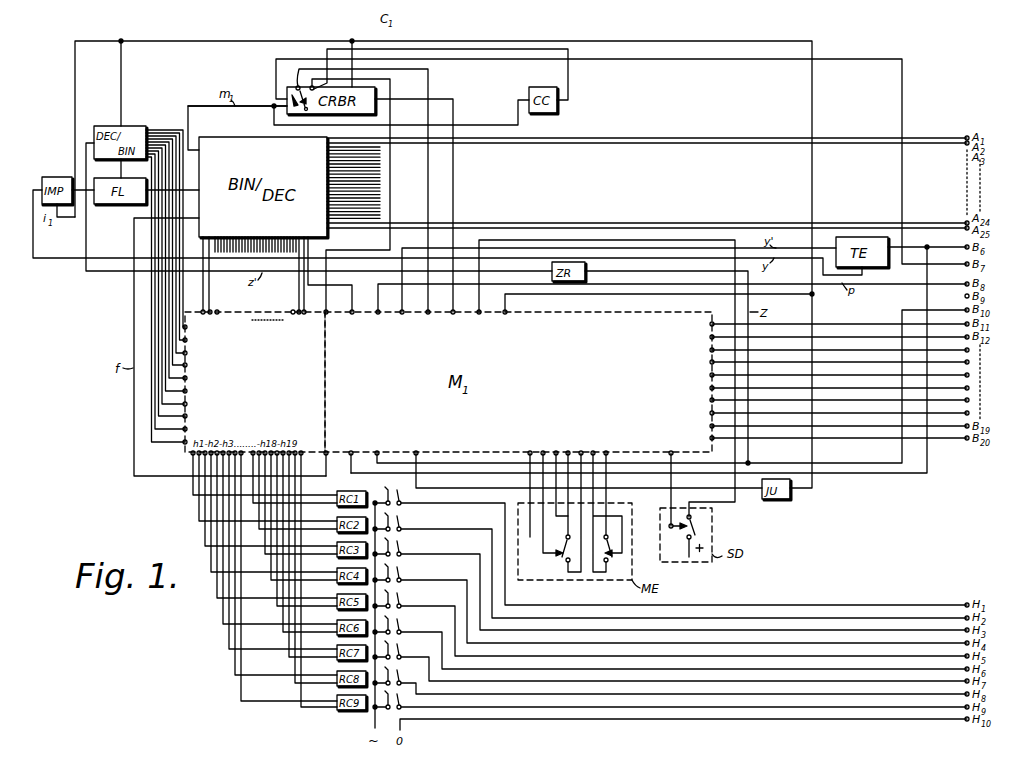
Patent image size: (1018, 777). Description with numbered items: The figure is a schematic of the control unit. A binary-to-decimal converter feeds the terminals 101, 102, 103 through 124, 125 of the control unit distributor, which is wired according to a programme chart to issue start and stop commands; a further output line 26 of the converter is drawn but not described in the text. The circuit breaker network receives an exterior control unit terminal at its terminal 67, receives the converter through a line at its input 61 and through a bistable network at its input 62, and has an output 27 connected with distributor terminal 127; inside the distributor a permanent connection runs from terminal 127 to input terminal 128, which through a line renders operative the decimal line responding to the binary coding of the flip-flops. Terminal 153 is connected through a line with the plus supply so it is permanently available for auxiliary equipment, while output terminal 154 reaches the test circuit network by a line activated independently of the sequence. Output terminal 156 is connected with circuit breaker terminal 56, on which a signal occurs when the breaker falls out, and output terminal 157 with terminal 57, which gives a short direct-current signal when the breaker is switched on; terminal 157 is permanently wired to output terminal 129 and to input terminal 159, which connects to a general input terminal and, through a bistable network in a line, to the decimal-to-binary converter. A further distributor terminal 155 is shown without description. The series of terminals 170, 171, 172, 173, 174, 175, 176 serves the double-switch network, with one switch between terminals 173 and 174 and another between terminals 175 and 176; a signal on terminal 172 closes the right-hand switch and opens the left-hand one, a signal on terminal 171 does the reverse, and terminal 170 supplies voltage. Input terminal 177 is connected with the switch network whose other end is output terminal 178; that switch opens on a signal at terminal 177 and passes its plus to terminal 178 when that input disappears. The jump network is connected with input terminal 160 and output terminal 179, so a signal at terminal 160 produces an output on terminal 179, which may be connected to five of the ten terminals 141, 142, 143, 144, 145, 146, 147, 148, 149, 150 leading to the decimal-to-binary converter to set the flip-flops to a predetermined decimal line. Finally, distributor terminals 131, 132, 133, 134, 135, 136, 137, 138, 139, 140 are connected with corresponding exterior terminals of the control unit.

The output line of BIN/DEC converter 26 is at (311, 244).
The output of circuit breaker 27 is at (297, 84).
The output terminal of circuit breaker 56 is at (284, 71).
The output terminal of circuit breaker 57 is at (381, 98).
The input of circuit breaker 61 is at (274, 108).
The input of circuit breaker 62 is at (326, 80).
The terminal of circuit breaker 67 is at (276, 94).
The distributor terminal 101 is at (202, 281).
The distributor terminal 102 is at (220, 281).
The distributor terminal 103 is at (232, 317).
The distributor terminal 124 is at (296, 281).
The distributor terminal 125 is at (312, 281).
The distributor output terminal 127 is at (351, 202).
The distributor input terminal 128 is at (335, 457).
The distributor output terminal 129 is at (361, 317).
The distributor terminal 131 is at (829, 324).
The distributor terminal 132 is at (829, 337).
The distributor terminal 133 is at (829, 350).
The distributor terminal 134 is at (829, 362).
The distributor terminal 135 is at (829, 375).
The distributor terminal 136 is at (829, 388).
The distributor terminal 137 is at (829, 400).
The distributor terminal 138 is at (829, 413).
The distributor terminal 139 is at (829, 426).
The distributor terminal 140 is at (829, 438).
The coding terminal 141 is at (188, 329).
The coding terminal 142 is at (177, 239).
The coding terminal 143 is at (177, 247).
The coding terminal 144 is at (177, 255).
The coding terminal 145 is at (177, 263).
The coding terminal 146 is at (177, 271).
The coding terminal 147 is at (177, 279).
The coding terminal 148 is at (177, 286).
The coding terminal 149 is at (177, 294).
The coding terminal 150 is at (188, 442).
The supply terminal 153 is at (671, 304).
The distributor output terminal 154 is at (618, 286).
The terminal of matrix M1 155 is at (360, 455).
The distributor output terminal 156 is at (437, 317).
The distributor output terminal 157 is at (462, 317).
The distributor input terminal 159 is at (561, 450).
The distributor input terminal 160 is at (588, 463).
The voltage supply terminal 170 is at (534, 487).
The activator terminal 171 is at (552, 497).
The activator terminal 172 is at (561, 477).
The switch terminal 173 is at (572, 505).
The switch terminal 174 is at (600, 505).
The switch terminal 175 is at (601, 500).
The switch terminal 176 is at (610, 486).
The distributor input terminal 177 is at (672, 450).
The distributor output terminal 178 is at (606, 378).
The jump output terminal 179 is at (658, 308).